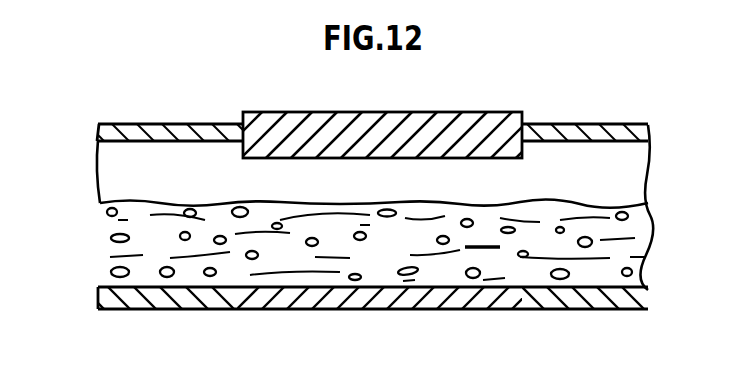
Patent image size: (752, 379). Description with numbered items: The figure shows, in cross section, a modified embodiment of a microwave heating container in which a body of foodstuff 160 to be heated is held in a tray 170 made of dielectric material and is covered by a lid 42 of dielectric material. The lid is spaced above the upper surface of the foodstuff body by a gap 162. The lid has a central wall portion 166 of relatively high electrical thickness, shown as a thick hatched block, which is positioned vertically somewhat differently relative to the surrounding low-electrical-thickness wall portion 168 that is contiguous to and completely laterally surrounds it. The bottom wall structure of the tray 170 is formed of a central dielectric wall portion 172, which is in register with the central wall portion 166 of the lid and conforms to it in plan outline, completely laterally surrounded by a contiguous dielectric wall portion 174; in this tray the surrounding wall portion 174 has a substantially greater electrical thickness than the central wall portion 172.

The lid 42 is at (592, 134).
The central wall portion 166 is at (423, 120).
The second dielectric wall portion 168 is at (129, 141).
The gap 162 is at (193, 175).
The body of foodstuff 160 is at (106, 201).
The tray 170 is at (98, 296).
The surrounding dielectric wall portion 174 is at (205, 309).
The central dielectric wall portion 172 is at (410, 302).